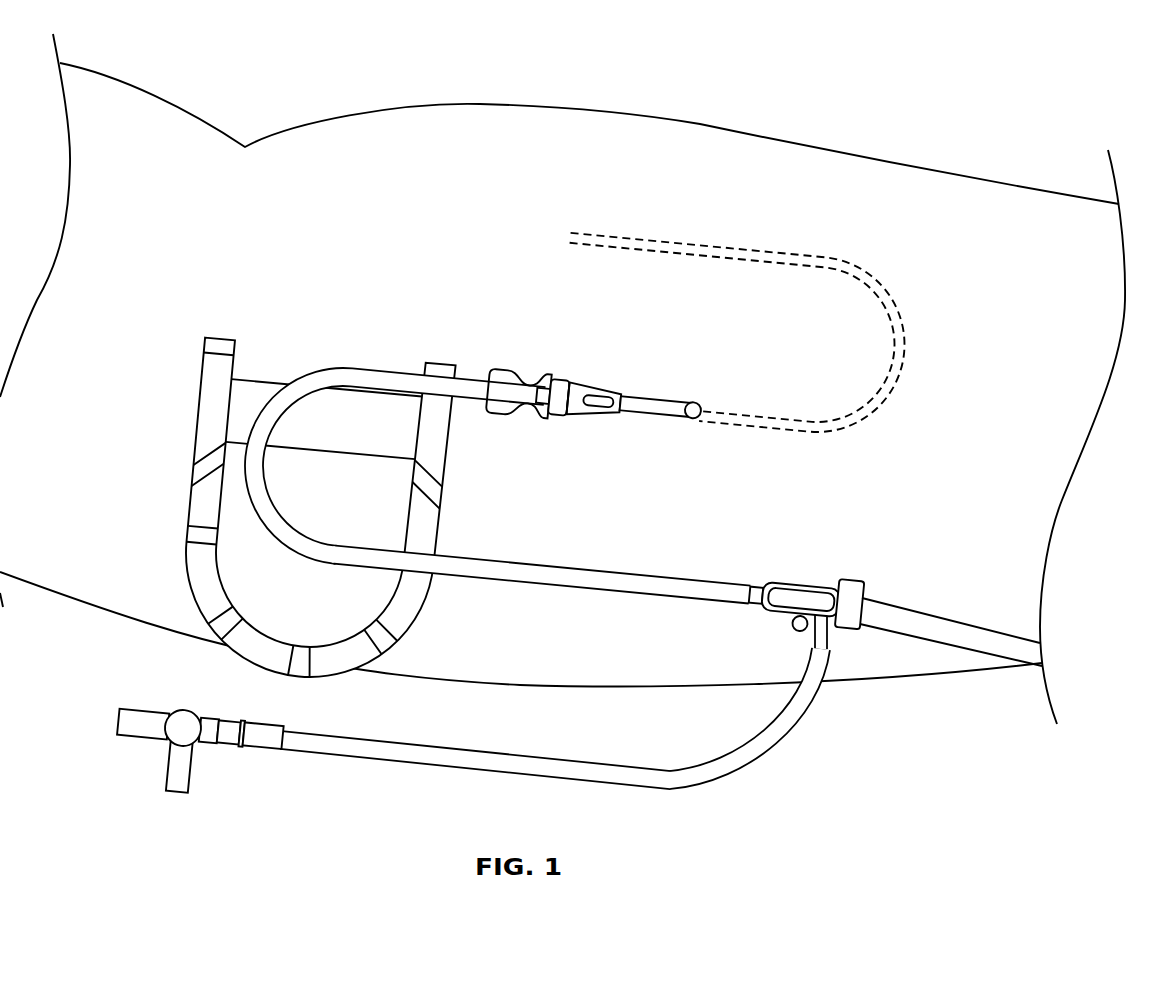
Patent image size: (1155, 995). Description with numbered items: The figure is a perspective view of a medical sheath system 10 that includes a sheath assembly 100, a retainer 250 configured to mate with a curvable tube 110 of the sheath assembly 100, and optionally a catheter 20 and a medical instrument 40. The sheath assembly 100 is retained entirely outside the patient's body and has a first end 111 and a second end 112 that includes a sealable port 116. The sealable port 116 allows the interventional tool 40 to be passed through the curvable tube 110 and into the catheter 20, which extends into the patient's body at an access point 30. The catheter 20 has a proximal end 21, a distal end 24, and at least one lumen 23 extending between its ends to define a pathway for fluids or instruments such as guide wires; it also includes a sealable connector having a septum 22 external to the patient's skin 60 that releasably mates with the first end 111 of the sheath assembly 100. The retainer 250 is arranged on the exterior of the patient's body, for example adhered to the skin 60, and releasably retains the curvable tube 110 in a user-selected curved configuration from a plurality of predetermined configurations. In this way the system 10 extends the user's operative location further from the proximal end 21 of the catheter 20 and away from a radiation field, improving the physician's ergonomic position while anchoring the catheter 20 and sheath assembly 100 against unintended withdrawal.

The medical sheath system 10 is at (562, 411).
The catheter 20 is at (644, 390).
The proximal end 21 is at (553, 378).
The septum 22 is at (560, 420).
The lumen 23 is at (652, 420).
The distal end 24 is at (568, 243).
The access point 30 is at (695, 402).
The medical instrument 40 is at (950, 620).
The skin 60 is at (181, 283).
The sheath assembly 100 is at (363, 362).
The curvable tube 110 is at (577, 590).
The first end 111 is at (503, 375).
The second end 112 is at (782, 615).
The sealable port 116 is at (852, 580).
The retainer 250 is at (192, 410).